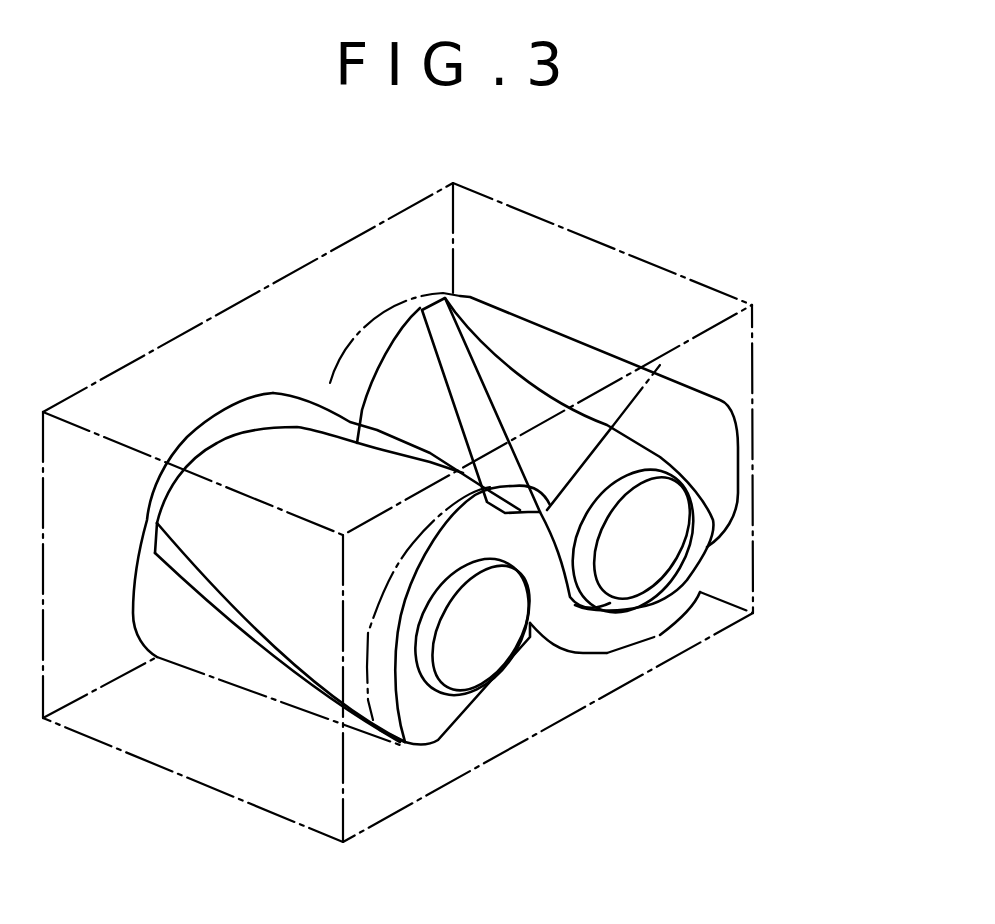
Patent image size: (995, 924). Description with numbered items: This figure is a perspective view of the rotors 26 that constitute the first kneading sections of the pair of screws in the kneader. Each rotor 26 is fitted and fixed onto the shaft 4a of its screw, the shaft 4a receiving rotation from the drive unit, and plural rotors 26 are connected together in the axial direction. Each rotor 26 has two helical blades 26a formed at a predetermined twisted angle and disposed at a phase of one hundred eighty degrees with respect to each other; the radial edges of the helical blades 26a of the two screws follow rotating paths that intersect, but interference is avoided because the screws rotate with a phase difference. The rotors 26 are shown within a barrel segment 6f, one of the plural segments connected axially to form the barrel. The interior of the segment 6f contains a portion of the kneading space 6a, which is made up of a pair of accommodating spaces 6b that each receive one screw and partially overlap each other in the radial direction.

The barrel segment 6f is at (170, 330).
The rotor 26 is at (540, 376).
The helical blade 26a is at (463, 485).
The shaft 4a is at (462, 663).
The accommodating space 6b is at (493, 697).
The kneading space 6a is at (753, 754).